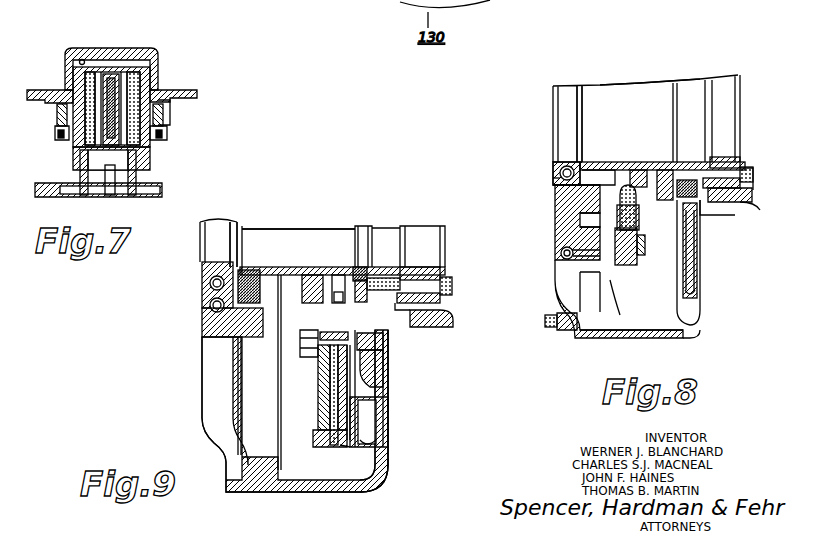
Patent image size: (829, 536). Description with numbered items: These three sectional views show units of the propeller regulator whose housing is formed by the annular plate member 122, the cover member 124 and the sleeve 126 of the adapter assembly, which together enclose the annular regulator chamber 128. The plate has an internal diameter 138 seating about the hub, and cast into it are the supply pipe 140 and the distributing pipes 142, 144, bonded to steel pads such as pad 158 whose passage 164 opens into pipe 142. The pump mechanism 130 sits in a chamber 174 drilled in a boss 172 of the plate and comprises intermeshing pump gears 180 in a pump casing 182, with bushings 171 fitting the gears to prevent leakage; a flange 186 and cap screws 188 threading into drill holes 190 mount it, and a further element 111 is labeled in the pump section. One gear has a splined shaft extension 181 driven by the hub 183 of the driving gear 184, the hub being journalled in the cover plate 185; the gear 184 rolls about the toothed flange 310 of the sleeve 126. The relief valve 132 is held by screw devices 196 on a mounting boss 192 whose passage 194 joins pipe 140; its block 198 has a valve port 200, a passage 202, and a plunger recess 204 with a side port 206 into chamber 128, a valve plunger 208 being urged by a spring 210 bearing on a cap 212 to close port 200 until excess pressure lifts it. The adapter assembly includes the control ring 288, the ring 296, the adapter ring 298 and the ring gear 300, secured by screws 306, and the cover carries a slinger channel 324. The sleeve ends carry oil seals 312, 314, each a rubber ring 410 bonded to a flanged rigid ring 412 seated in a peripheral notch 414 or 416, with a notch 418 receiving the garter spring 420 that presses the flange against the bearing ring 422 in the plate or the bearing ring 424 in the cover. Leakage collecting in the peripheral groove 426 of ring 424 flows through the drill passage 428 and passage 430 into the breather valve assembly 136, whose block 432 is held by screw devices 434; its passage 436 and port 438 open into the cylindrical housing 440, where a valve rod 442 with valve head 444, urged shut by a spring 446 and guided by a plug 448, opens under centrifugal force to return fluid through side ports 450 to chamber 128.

In FIG. 7, the valve stem 111 is at (150, 138).
In FIG. 7, the plate member 122 is at (197, 93).
In FIG. 9, the plate member 122 is at (212, 400).
In FIG. 8, the plate member 122 is at (560, 238).
In FIG. 9, the cover member 124 is at (380, 458).
In FIG. 8, the cover member 124 is at (688, 330).
In FIG. 9, the sleeve 126 is at (305, 270).
In FIG. 8, the sleeve 126 is at (642, 162).
In FIG. 8, the regulator chamber 128 is at (692, 312).
In FIG. 7, the pump mechanism 130 is at (33, 160).
In FIG. 8, the relief valve 132 is at (523, 225).
In FIG. 9, the breather valve assembly 136 is at (345, 447).
In FIG. 8, the internal diameter 138 is at (563, 107).
In FIG. 8, the supply pipe 140 is at (561, 258).
In FIG. 9, the distributing pipe 142 is at (210, 283).
In FIG. 8, the distributing pipe 142 is at (558, 172).
In FIG. 9, the distributing pipe 144 is at (210, 305).
In FIG. 8, the steel pad 158 is at (555, 188).
In FIG. 8, the passage 164 is at (553, 178).
In FIG. 7, the bushings 171 is at (107, 78).
In FIG. 7, the boss 172 is at (55, 118).
In FIG. 7, the chamber 174 is at (83, 60).
In FIG. 7, the pump gears 180 is at (73, 82).
In FIG. 7, the shaft extension 181 is at (80, 186).
In FIG. 7, the pump casing 182 is at (158, 63).
In FIG. 7, the hub 183 is at (108, 190).
In FIG. 7, the gear 184 is at (160, 189).
In FIG. 7, the cover plate 185 is at (140, 188).
In FIG. 7, the flange 186 is at (165, 128).
In FIG. 7, the cap screws 188 is at (57, 137).
In FIG. 7, the drill holes 190 is at (170, 107).
In FIG. 8, the mounting boss 192 is at (597, 268).
In FIG. 8, the passage 194 is at (565, 278).
In FIG. 8, the screw devices 196 is at (632, 258).
In FIG. 8, the block 198 is at (636, 222).
In FIG. 8, the valve port 200 is at (692, 258).
In FIG. 8, the passage 202 is at (612, 292).
In FIG. 8, the plunger recess 204 is at (628, 200).
In FIG. 8, the side port 206 is at (642, 242).
In FIG. 8, the valve plunger 208 is at (645, 168).
In FIG. 8, the spring 210 is at (597, 172).
In FIG. 8, the cap 212 is at (585, 215).
In FIG. 9, the control ring 288 is at (335, 270).
In FIG. 8, the control ring 288 is at (665, 165).
In FIG. 9, the ring 296 is at (407, 273).
In FIG. 8, the ring 296 is at (720, 160).
In FIG. 9, the adapter ring 298 is at (453, 325).
In FIG. 8, the adapter ring 298 is at (735, 205).
In FIG. 9, the ring gear 300 is at (395, 335).
In FIG. 8, the ring gear 300 is at (742, 192).
In FIG. 8, the screws 306 is at (745, 178).
In FIG. 9, the toothed flange 310 is at (320, 285).
In FIG. 8, the toothed flange 310 is at (680, 178).
In FIG. 9, the oil seal 312 is at (246, 265).
In FIG. 8, the oil seal 312 is at (585, 162).
In FIG. 9, the oil seal 314 is at (382, 278).
In FIG. 8, the oil seal 314 is at (715, 215).
In FIG. 9, the channel 324 is at (380, 442).
In FIG. 8, the channel 324 is at (696, 290).
In FIG. 9, the rubber ring 410 is at (215, 322).
In FIG. 9, the flanged rigid ring 412 is at (215, 268).
In FIG. 8, the flanged rigid ring 412 is at (565, 165).
In FIG. 9, the peripheral notch 414 is at (250, 267).
In FIG. 9, the peripheral notch 416 is at (356, 267).
In FIG. 9, the notch 418 is at (252, 272).
In FIG. 9, the garter spring 420 is at (262, 270).
In FIG. 9, the bearing ring 422 is at (205, 345).
In FIG. 8, the bearing ring 422 is at (560, 168).
In FIG. 8, the bearing ring 424 is at (697, 212).
In FIG. 9, the peripheral groove 426 is at (383, 345).
In FIG. 8, the peripheral groove 426 is at (728, 178).
In FIG. 9, the drill passage 428 is at (385, 356).
In FIG. 9, the passage 430 is at (375, 375).
In FIG. 9, the block 432 is at (356, 338).
In FIG. 9, the screw devices 434 is at (330, 336).
In FIG. 9, the passage 436 is at (306, 387).
In FIG. 9, the port 438 is at (315, 387).
In FIG. 9, the cylindrical housing 440 is at (330, 420).
In FIG. 9, the valve rod 442 is at (388, 420).
In FIG. 9, the valve 444 is at (270, 393).
In FIG. 9, the spring 446 is at (330, 405).
In FIG. 9, the plug 448 is at (320, 432).
In FIG. 9, the side ports 450 is at (353, 385).